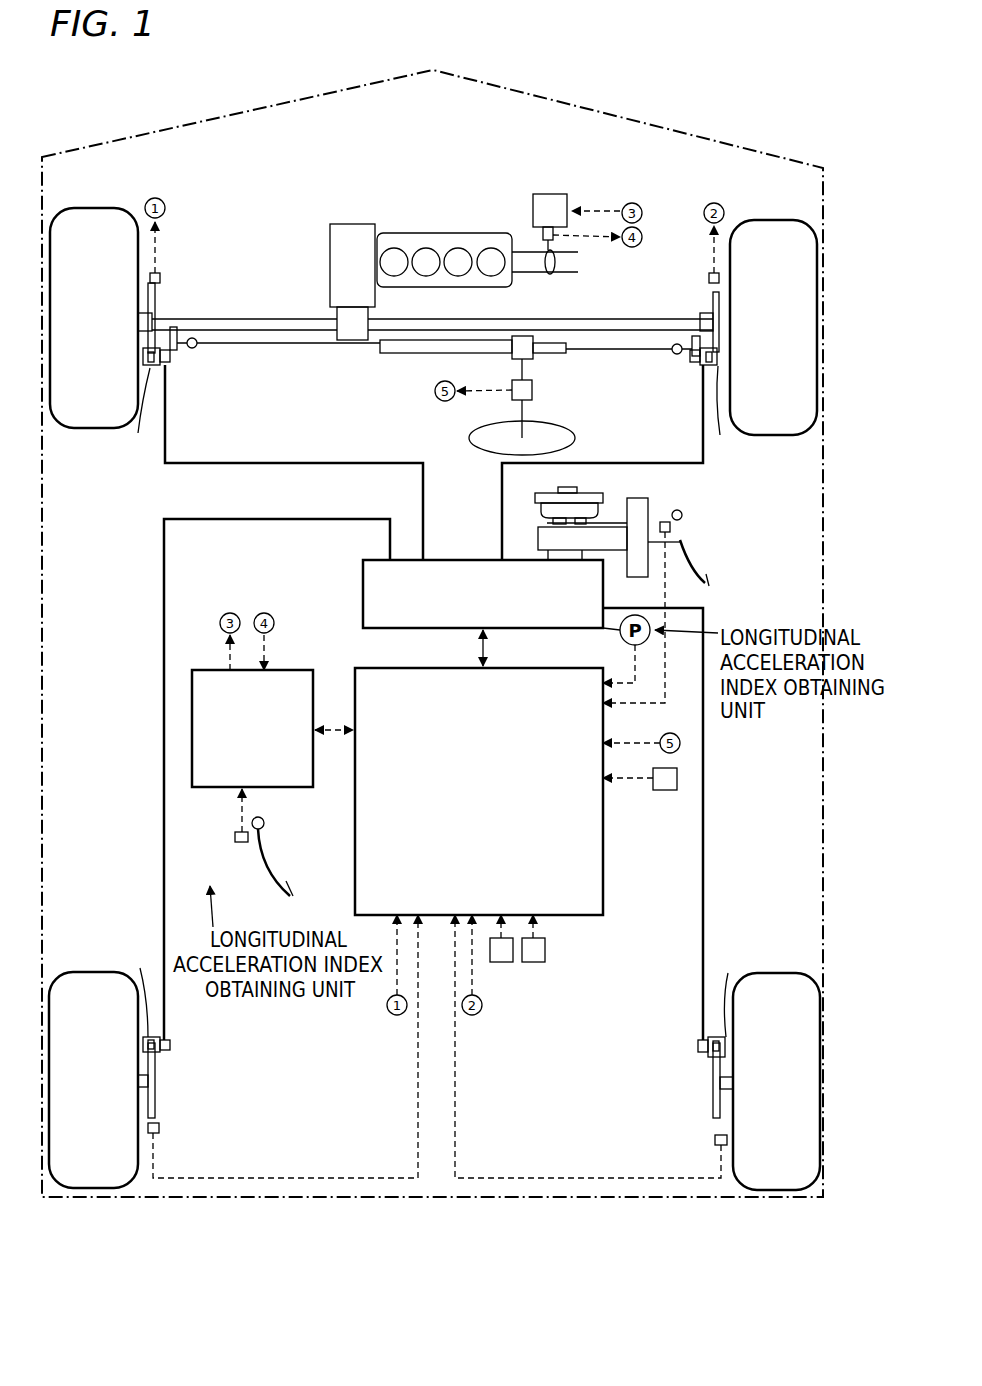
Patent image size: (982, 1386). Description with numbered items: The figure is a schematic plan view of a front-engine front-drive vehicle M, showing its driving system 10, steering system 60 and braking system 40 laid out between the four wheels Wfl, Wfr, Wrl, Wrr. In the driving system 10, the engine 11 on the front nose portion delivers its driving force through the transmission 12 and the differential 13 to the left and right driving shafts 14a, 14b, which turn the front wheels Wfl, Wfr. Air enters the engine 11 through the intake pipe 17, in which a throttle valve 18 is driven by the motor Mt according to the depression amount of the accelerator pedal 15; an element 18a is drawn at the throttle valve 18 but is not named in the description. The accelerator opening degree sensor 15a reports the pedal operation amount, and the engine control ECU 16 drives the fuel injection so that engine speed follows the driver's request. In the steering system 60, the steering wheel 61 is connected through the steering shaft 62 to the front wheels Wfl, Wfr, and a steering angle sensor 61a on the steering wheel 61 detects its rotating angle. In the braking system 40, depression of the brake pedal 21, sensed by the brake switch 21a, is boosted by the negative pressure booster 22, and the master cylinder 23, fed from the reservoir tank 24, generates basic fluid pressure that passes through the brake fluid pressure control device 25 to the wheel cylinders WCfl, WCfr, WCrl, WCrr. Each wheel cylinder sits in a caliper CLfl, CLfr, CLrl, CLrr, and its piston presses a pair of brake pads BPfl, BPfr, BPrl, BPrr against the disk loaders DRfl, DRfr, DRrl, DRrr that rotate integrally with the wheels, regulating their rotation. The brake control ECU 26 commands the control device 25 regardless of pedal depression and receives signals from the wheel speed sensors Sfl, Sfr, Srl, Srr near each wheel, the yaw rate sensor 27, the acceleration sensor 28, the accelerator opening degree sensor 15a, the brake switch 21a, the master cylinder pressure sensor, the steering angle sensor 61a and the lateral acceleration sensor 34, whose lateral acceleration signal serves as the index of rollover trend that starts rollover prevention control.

The vehicle M is at (480, 78).
The driving system 10 is at (400, 185).
The engine 11 is at (445, 232).
The transmission 12 is at (330, 250).
The differential 13 is at (378, 318).
The left driving shaft 14a is at (323, 316).
The right driving shaft 14b is at (480, 318).
The accelerator pedal 15 is at (265, 860).
The accelerator opening degree sensor 15a is at (235, 838).
The engine control ECU 16 is at (275, 670).
The intake pipe 17 is at (570, 272).
The throttle valve 18 is at (545, 262).
The throttle valve shaft 18a is at (540, 250).
The brake pedal 21 is at (685, 552).
The brake switch 21a is at (677, 511).
The negative pressure booster 22 is at (640, 500).
The master cylinder 23 is at (535, 527).
The reservoir tank 24 is at (588, 493).
The brake fluid pressure control device 25 is at (460, 628).
The brake control ECU 26 is at (603, 887).
The yaw rate sensor 27 is at (501, 962).
The acceleration sensor 28 is at (533, 962).
The lateral acceleration sensor 34 is at (665, 790).
The braking system 40 is at (318, 588).
The steering system 60 is at (446, 418).
The steering wheel 61 is at (575, 437).
The steering angle sensor 61a is at (532, 390).
The steering shaft 62 is at (272, 345).
The motor Mt is at (552, 194).
The front left wheel Wfl is at (99, 208).
The front right wheel Wfr is at (772, 220).
The rear left wheel Wrl is at (95, 972).
The rear right wheel Wrr is at (773, 973).
The front left wheel speed sensor Sfl is at (160, 278).
The front right wheel speed sensor Sfr is at (709, 278).
The rear left wheel speed sensor Srl is at (160, 1128).
The rear right wheel speed sensor Srr is at (715, 1139).
The front left disk loader DRfl is at (155, 304).
The front right disk loader DRfr is at (713, 305).
The rear left disk loader DRrl is at (157, 1087).
The rear right disk loader DRrr is at (713, 1087).
The front left brake pad BPfl is at (170, 356).
The front right brake pad BPfr is at (700, 357).
The rear left brake pad BPrl is at (170, 1046).
The rear right brake pad BPrr is at (698, 1047).
The front left wheel cylinder WCfl is at (165, 367).
The front right wheel cylinder WCfr is at (710, 372).
The rear left wheel cylinder WCrl is at (163, 1040).
The rear right wheel cylinder WCrr is at (706, 1040).
The front left caliper CLfl is at (128, 416).
The front right caliper CLfr is at (723, 415).
The rear left caliper CLrl is at (132, 991).
The rear right caliper CLrr is at (729, 994).